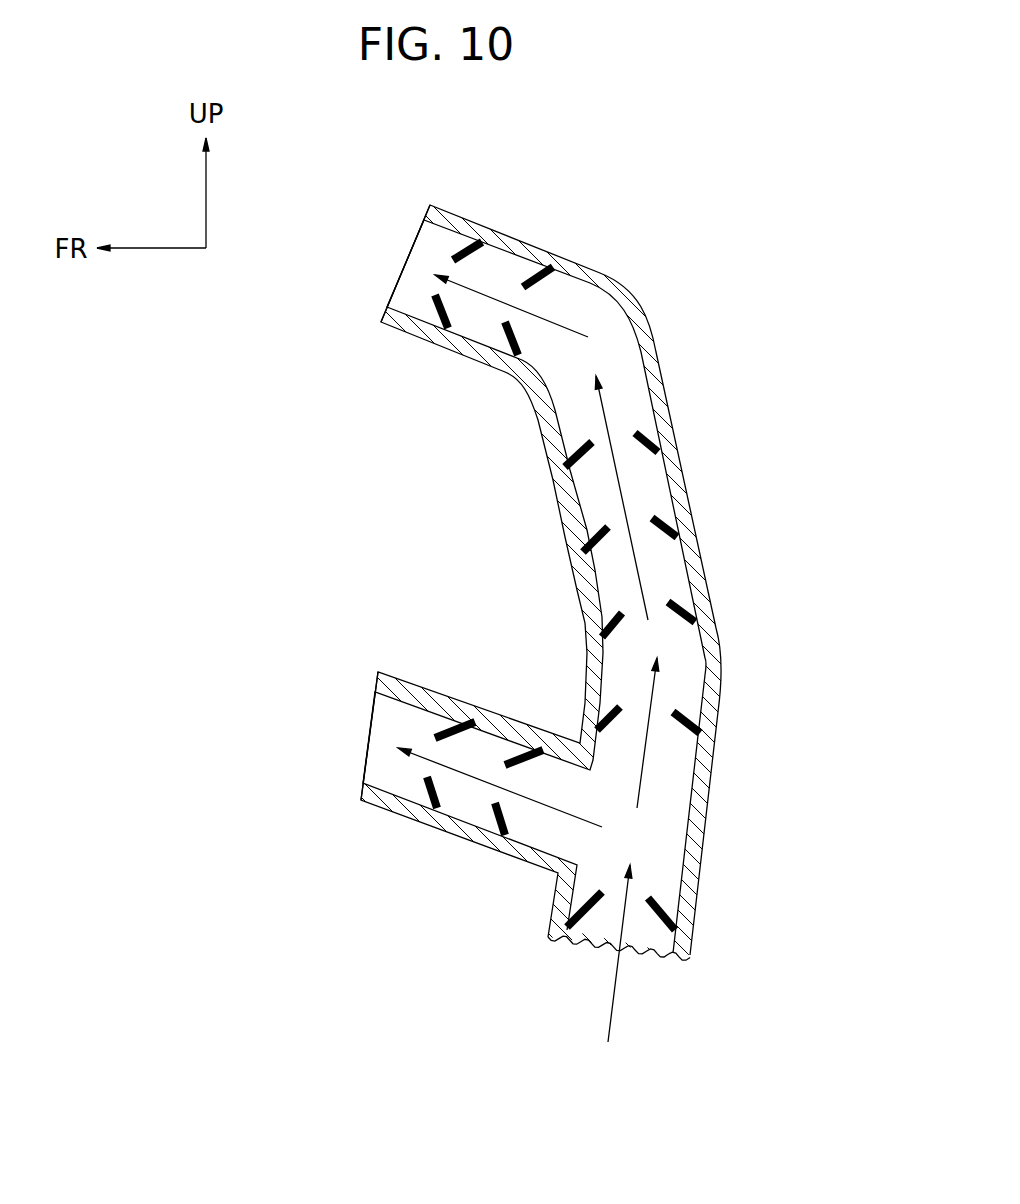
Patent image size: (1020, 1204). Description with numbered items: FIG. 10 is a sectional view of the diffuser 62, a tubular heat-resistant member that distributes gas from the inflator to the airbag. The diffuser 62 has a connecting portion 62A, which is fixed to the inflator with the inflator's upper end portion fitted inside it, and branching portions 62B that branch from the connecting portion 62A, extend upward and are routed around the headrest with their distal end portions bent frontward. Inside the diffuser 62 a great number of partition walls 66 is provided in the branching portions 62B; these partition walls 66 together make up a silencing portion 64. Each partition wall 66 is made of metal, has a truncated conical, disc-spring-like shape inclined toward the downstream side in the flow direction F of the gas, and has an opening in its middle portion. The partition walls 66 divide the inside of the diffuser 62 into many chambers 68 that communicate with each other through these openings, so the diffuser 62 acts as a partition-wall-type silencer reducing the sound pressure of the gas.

The diffuser 62 is at (724, 645).
The connecting portion 62A is at (687, 957).
The branching portion 62B is at (640, 303).
The silencing portion 64 is at (600, 920).
The partition wall 66 is at (463, 245).
The chamber 68 is at (470, 330).
The flow direction F is at (567, 318).